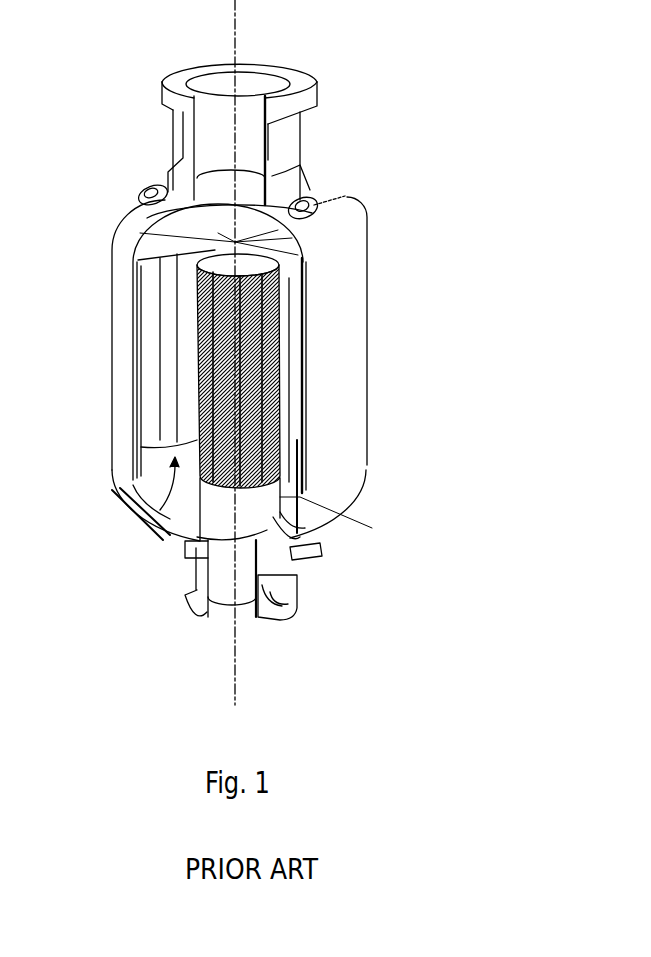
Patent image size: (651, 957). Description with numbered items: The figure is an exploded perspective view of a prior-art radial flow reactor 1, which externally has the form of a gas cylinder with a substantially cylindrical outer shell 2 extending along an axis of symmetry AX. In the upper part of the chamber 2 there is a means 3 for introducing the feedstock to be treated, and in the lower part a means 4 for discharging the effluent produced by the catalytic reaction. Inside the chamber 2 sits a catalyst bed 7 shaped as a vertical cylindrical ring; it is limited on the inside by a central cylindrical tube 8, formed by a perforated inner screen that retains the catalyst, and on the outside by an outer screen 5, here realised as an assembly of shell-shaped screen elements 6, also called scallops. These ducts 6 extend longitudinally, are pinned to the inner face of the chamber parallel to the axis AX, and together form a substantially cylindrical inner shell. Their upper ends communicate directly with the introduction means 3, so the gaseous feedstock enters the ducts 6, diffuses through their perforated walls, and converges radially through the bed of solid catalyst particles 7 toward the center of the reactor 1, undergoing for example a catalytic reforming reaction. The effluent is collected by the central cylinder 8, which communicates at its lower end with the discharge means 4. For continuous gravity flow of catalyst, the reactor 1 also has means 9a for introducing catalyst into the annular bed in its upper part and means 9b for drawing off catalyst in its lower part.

The radial flow reactor 1 is at (110, 236).
The outer shell 2 is at (355, 322).
The means for introducing the feedstock 3 is at (220, 88).
The means for discharging the effluent 4 is at (226, 600).
The outer screen 5 is at (152, 408).
The shell-shaped screen elements 6 is at (185, 355).
The catalyst bed 7 is at (165, 510).
The central cylindrical tube 8 is at (312, 405).
The means for introducing the catalyst 9a is at (296, 184).
The means for drawing off the catalyst 9b is at (309, 563).
The axis of symmetry AX is at (240, 15).